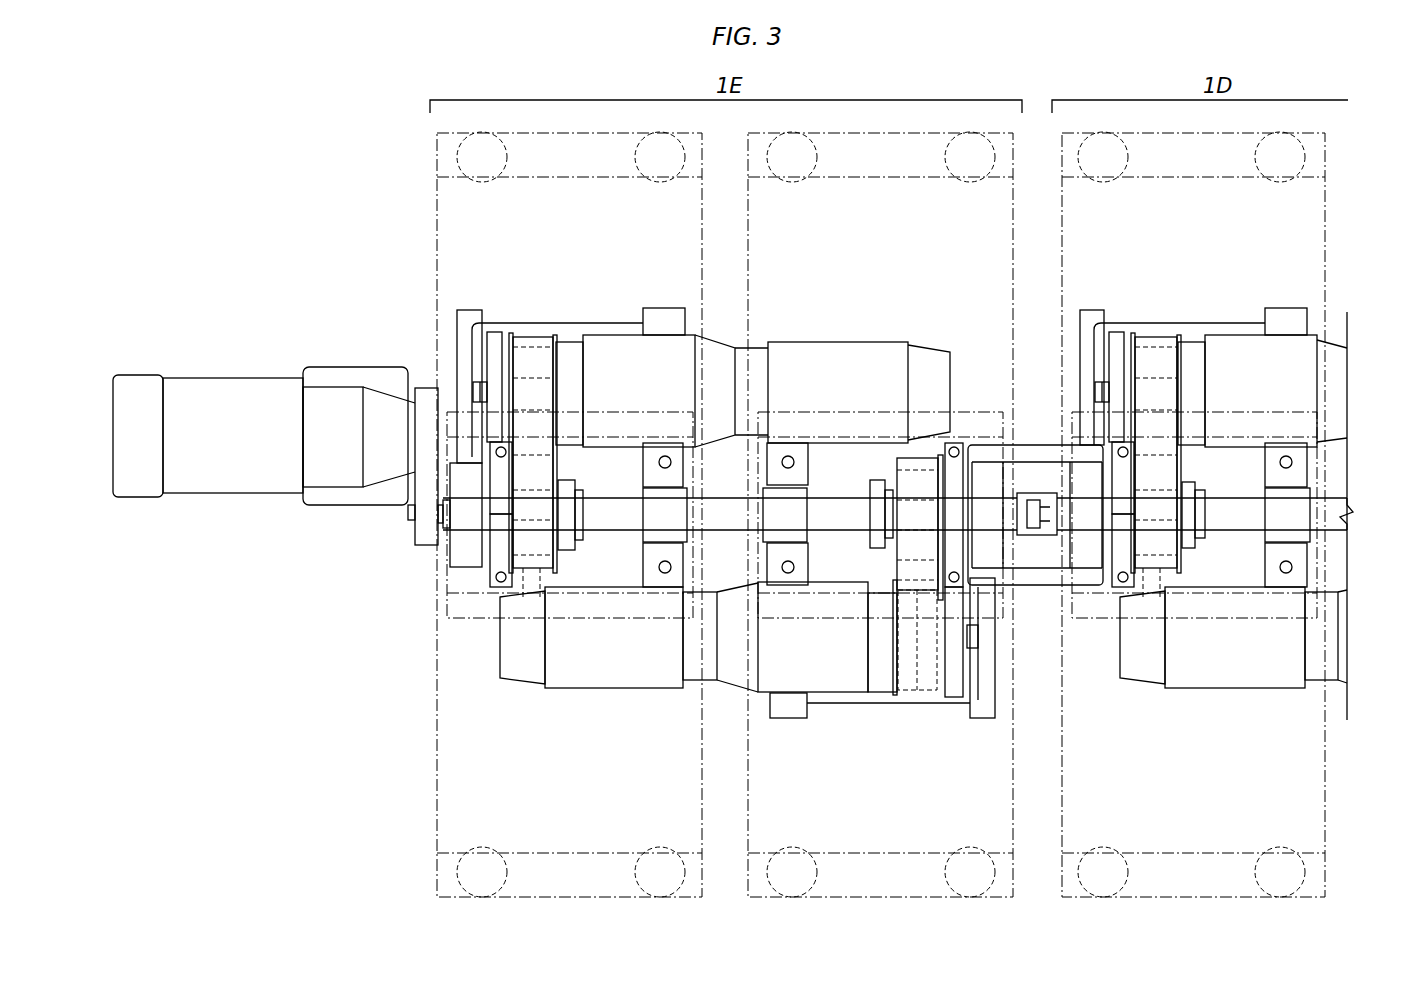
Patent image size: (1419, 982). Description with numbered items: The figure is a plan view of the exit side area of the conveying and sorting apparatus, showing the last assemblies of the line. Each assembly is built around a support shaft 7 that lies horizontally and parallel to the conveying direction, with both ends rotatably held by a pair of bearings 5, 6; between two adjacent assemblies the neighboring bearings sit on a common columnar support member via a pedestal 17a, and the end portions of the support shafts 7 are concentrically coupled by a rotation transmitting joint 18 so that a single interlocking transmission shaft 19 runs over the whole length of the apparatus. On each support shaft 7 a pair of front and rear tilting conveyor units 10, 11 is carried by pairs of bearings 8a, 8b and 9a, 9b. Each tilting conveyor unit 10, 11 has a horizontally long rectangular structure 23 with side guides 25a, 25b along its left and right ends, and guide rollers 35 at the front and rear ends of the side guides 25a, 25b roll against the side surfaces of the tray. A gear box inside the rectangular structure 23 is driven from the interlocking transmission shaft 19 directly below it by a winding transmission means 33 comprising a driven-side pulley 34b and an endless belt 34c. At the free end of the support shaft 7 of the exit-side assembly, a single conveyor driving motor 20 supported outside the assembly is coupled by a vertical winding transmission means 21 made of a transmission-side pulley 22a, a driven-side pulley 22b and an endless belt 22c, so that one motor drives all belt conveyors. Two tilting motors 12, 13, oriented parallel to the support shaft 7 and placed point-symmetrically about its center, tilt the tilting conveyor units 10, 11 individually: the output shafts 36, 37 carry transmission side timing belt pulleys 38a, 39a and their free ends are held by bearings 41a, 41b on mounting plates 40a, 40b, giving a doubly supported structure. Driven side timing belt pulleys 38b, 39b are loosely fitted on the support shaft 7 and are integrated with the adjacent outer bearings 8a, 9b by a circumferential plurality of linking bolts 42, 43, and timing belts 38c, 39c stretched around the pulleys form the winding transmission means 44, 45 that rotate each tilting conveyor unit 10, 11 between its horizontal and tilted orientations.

The bearing 5 is at (995, 480).
The bearing 6 is at (467, 545).
The support shaft 7 is at (720, 512).
The bearing 8a is at (952, 510).
The bearing 8b is at (787, 507).
The bearing 9a is at (667, 507).
The bearing 9b is at (500, 537).
The tilting conveyor unit 10 is at (990, 798).
The tilting conveyor unit 11 is at (597, 755).
The tilting motor 12 is at (637, 663).
The tilting motor 13 is at (875, 374).
The pedestal 17a is at (1032, 453).
The rotation transmitting joint 18 is at (1045, 532).
The interlocking transmission shaft 19 is at (724, 537).
The conveyor driving motor 20 is at (213, 407).
The winding transmission means 21 is at (413, 432).
The transmission-side pulley 22a is at (382, 400).
The driven-side pulley 22b is at (405, 512).
The endless belt 22c is at (425, 462).
The rectangular structure 23 is at (465, 722).
The side guide 25a is at (565, 870).
The side guide 25b is at (573, 165).
The winding transmission means 33 is at (578, 517).
The driven-side pulley 34b is at (583, 543).
The endless belt 34c is at (563, 477).
The guide roller 35 is at (630, 157).
The output shaft 36 is at (978, 640).
The output shaft 37 is at (528, 387).
The transmission side timing belt pulley 38a is at (893, 633).
The driven side timing belt pulley 38b is at (893, 467).
The timing belt 38c is at (913, 663).
The transmission side timing belt pulley 39a is at (508, 362).
The driven side timing belt pulley 39b is at (445, 525).
The timing belt 39c is at (540, 422).
The mounting plate 40a is at (846, 702).
The mounting plate 40b is at (573, 330).
The bearing 41a is at (957, 667).
The bearing 41b is at (497, 343).
The linking bolt 42 is at (920, 488).
The linking bolt 43 is at (530, 598).
The winding transmission means 44 is at (922, 695).
The winding transmission means 45 is at (531, 337).